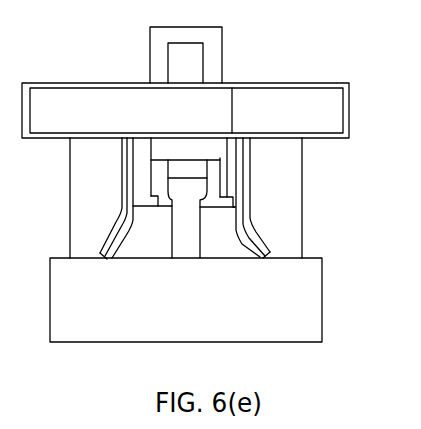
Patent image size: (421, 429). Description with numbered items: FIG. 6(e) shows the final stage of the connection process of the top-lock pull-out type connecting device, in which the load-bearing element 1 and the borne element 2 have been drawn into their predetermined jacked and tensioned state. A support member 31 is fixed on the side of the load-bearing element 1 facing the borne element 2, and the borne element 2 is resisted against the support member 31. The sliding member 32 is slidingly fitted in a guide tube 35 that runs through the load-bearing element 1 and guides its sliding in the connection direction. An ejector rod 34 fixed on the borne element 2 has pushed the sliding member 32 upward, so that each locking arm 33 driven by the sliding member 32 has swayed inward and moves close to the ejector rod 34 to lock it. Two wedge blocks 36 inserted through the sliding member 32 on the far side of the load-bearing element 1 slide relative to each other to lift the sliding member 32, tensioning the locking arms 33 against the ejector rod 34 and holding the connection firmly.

The load-bearing element 1 is at (288, 83).
The borne element 2 is at (312, 305).
The support member 31 is at (295, 203).
The sliding member 32 is at (168, 150).
The locking arm 33 is at (156, 195).
The ejector rod 34 is at (187, 236).
The guide tube 35 is at (145, 115).
The wedge block 36 is at (182, 68).